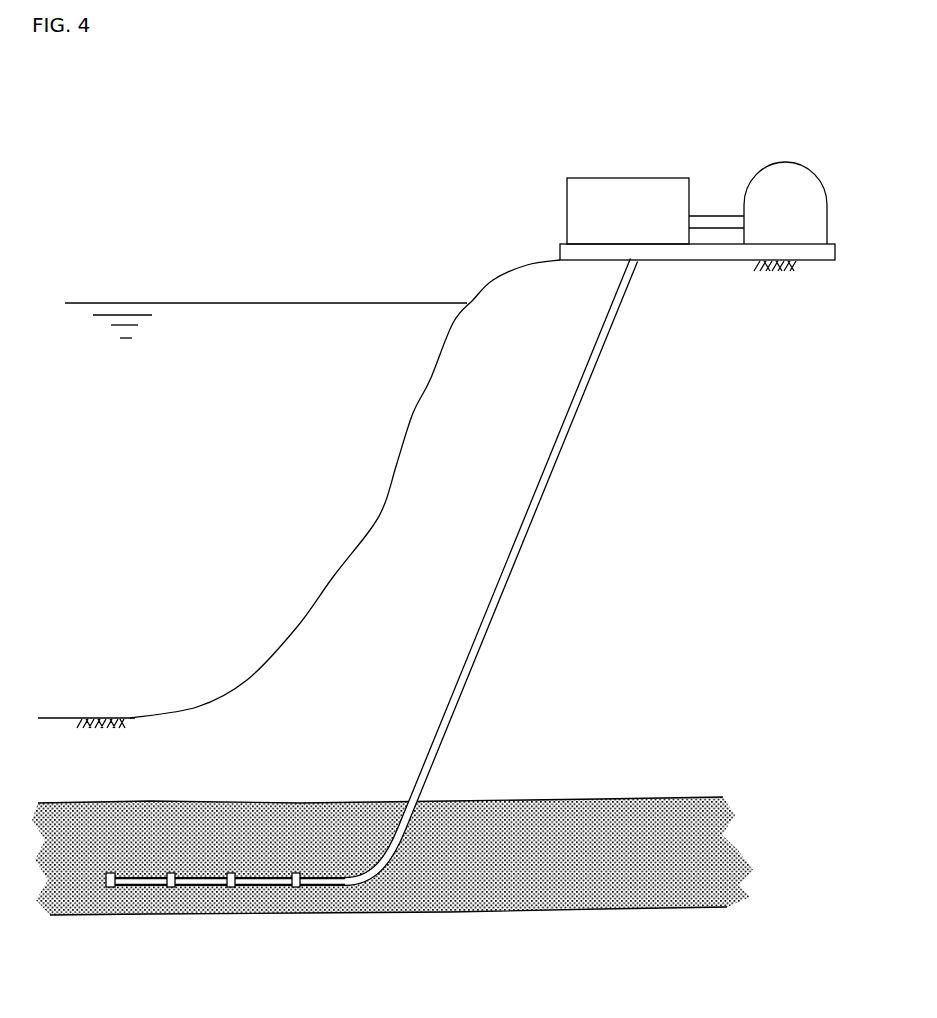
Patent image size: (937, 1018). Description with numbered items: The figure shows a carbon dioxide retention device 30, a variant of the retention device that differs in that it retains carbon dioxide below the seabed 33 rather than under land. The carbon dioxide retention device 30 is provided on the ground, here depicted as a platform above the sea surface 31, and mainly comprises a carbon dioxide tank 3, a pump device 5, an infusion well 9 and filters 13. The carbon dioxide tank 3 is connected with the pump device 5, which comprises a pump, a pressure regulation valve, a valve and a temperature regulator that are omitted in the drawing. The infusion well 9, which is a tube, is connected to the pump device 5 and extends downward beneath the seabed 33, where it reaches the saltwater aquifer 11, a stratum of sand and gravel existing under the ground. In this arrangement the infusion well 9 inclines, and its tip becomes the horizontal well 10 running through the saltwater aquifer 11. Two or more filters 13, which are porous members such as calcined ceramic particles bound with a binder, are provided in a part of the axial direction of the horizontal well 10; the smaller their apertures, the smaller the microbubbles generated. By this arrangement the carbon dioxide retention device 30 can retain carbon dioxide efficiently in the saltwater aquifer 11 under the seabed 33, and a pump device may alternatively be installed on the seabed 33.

The carbon dioxide tank 3 is at (786, 177).
The pump device 5 is at (620, 190).
The infusion well 9 is at (530, 508).
The horizontal well 10 is at (232, 873).
The saltwater aquifer 11 is at (727, 895).
The filter 13 is at (167, 873).
The carbon dioxide retention device 30 is at (352, 172).
The sea surface 31 is at (160, 303).
The seabed 33 is at (128, 718).